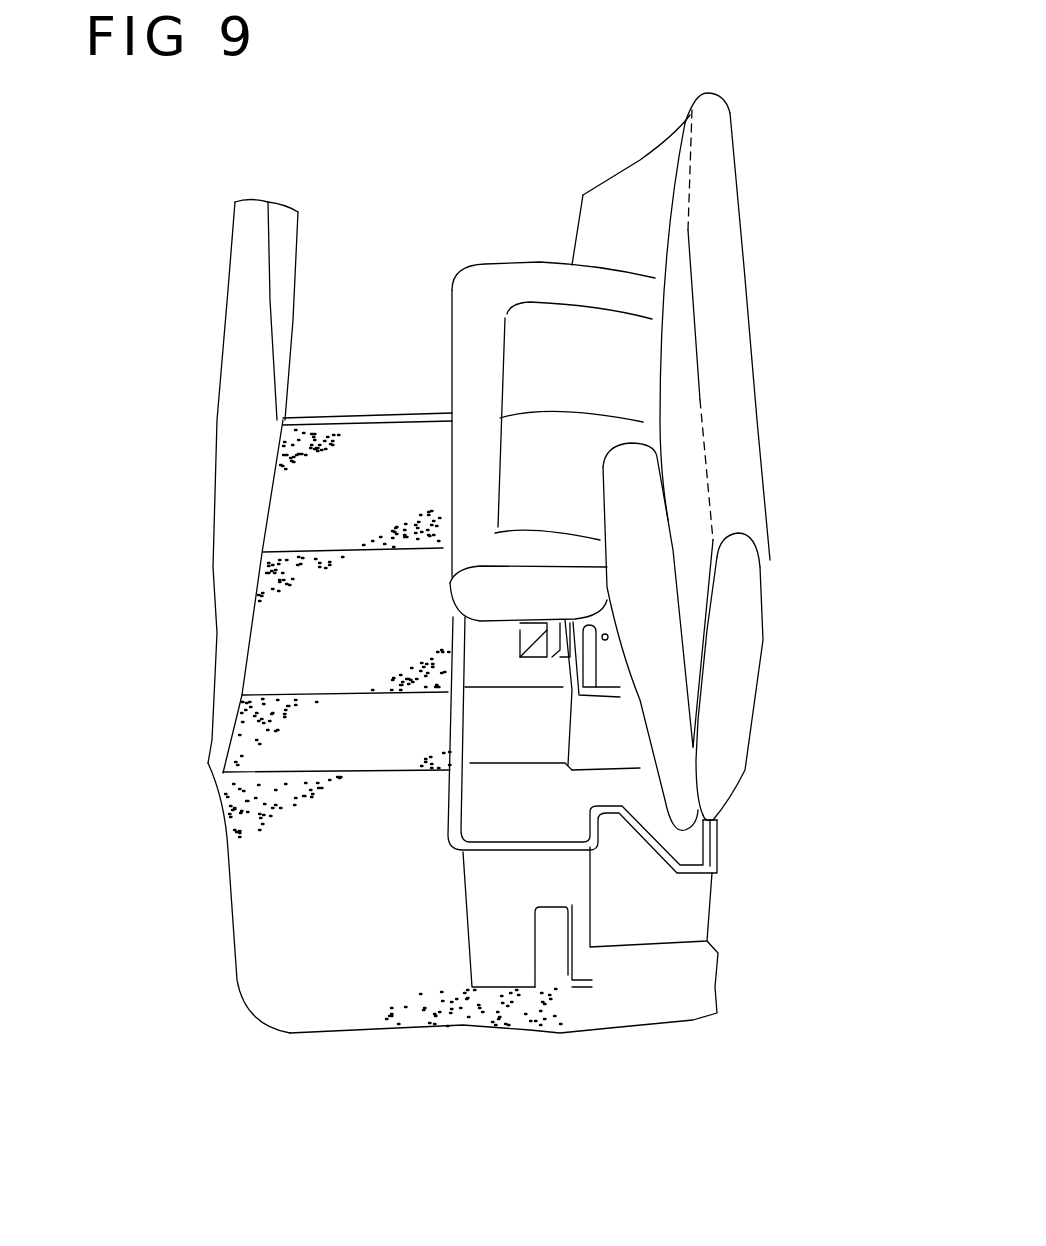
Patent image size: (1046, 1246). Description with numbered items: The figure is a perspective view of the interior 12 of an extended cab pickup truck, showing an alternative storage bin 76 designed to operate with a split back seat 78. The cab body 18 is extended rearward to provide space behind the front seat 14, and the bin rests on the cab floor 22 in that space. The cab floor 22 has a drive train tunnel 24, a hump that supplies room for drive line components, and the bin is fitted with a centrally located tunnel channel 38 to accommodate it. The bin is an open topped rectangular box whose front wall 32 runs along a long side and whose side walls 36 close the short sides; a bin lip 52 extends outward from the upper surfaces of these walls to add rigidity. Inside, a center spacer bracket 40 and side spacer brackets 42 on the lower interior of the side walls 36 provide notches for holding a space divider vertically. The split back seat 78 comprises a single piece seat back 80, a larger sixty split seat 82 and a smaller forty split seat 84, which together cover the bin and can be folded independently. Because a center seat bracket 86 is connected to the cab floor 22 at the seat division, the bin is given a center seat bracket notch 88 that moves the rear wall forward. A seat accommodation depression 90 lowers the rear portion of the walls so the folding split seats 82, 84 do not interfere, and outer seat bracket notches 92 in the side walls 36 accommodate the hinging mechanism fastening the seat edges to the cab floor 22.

The extended cab pickup's interior 12 is at (418, 287).
The front seat 14 is at (248, 228).
The cab body 18 is at (617, 192).
The cab floor 22 is at (347, 413).
The drive train tunnel 24 is at (277, 627).
The front wall 32 is at (465, 787).
The side walls 36 is at (507, 915).
The tunnel channel 38 is at (497, 650).
The center spacer bracket 40 is at (513, 640).
The side spacer brackets 42 is at (555, 952).
The bin lip 52 is at (453, 850).
The alternative storage bin 76 is at (433, 833).
The split back seat 78 is at (755, 265).
The seat back 80 is at (733, 395).
The 60 split seat 82 is at (618, 360).
The 40 split seat 84 is at (642, 515).
The center seat bracket 86 is at (610, 653).
The center seat bracket notch 88 is at (613, 737).
The seat accommodation depression 90 is at (687, 852).
The outer seat bracket notches 92 is at (645, 917).